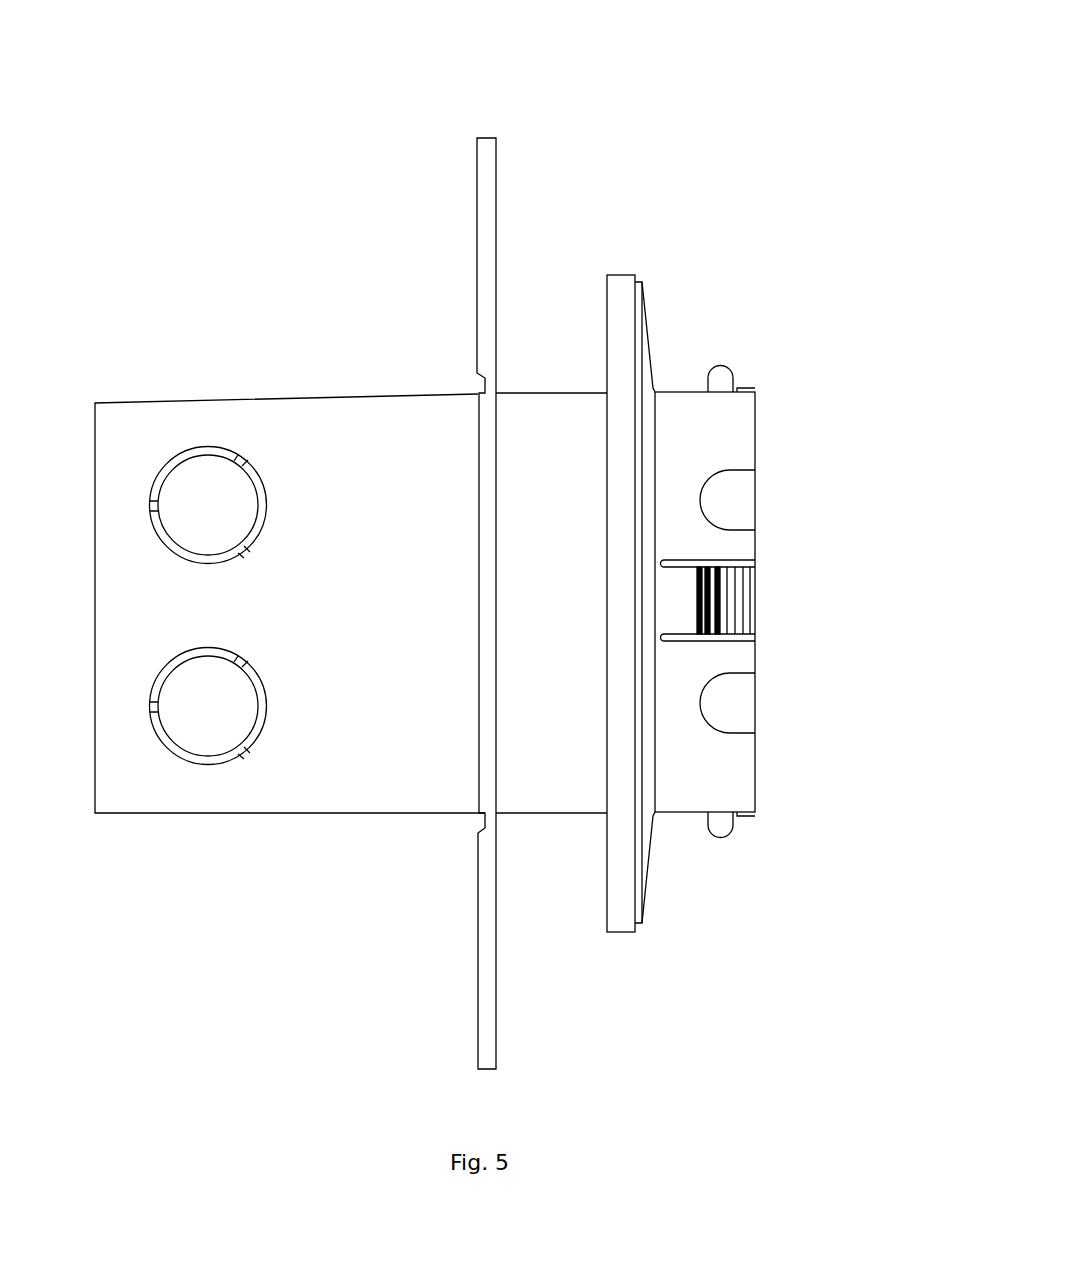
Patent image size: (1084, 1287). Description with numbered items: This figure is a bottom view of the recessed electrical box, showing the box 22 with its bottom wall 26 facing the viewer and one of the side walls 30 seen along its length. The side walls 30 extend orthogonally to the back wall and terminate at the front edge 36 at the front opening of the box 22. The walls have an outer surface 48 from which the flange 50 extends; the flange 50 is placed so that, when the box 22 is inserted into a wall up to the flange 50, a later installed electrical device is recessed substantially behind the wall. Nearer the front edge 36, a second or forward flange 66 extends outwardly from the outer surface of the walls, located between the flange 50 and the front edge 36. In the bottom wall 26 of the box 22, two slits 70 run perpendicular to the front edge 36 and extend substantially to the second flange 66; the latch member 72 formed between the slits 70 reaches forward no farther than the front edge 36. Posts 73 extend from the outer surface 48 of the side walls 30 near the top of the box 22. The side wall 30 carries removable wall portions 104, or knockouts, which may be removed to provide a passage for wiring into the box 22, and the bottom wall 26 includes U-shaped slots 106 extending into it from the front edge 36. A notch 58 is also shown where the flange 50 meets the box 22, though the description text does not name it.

The box 22 is at (205, 258).
The bottom wall 26 is at (351, 603).
The side walls 30 is at (350, 395).
The front edge 36 is at (765, 437).
The outer surface 48 is at (545, 382).
The flange 50 is at (496, 177).
The notch 58 is at (478, 822).
The second flange 66 is at (622, 275).
The slits 70 is at (697, 568).
The latch member 72 is at (740, 598).
The posts 73 is at (722, 368).
The removable wall portions 104 is at (208, 606).
The U-shaped slots 106 is at (737, 500).